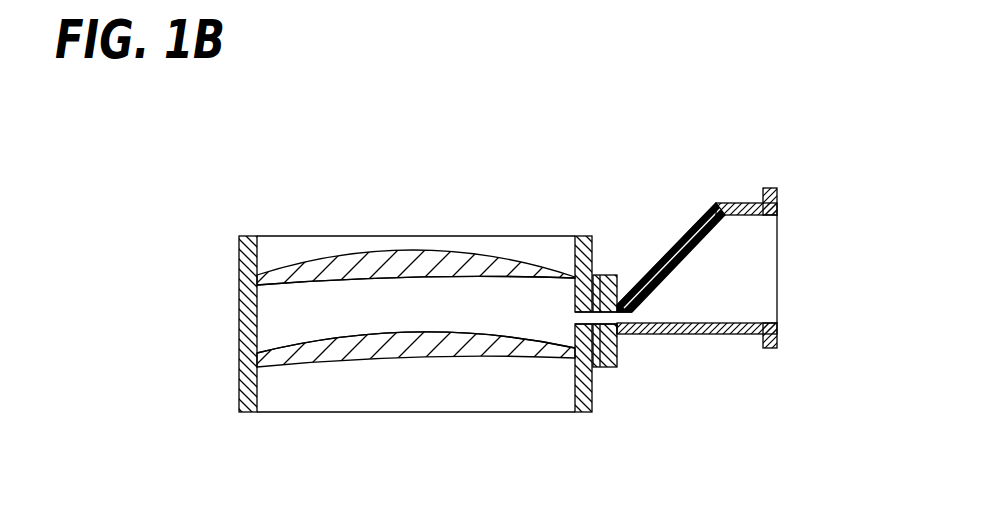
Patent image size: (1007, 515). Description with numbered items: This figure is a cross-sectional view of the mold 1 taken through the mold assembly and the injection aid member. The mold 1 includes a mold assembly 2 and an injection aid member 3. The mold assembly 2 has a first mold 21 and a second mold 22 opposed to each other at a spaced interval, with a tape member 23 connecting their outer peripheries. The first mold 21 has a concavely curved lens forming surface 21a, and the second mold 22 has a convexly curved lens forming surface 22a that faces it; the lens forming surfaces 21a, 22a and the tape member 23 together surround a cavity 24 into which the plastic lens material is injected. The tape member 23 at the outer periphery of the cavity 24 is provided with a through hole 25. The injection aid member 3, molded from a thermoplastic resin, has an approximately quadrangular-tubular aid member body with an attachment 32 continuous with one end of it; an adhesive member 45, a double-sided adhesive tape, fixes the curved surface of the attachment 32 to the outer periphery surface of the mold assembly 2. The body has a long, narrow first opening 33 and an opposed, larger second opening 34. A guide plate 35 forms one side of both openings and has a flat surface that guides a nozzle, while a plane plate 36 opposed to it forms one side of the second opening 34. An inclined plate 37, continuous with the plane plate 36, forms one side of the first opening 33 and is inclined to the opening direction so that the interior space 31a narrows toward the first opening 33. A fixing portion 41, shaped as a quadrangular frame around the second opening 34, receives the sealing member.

The mold 1 is at (630, 152).
The mold assembly 2 is at (529, 440).
The injection aid member 3 is at (727, 372).
The first mold 21 is at (430, 252).
The lens forming surface 21a is at (326, 284).
The second mold 22 is at (430, 352).
The lens forming surface 22a is at (334, 330).
The tape member 23 is at (240, 325).
The cavity 24 is at (478, 320).
The through hole 25 is at (575, 311).
The interior space 31a is at (742, 270).
The attachment 32 is at (623, 290).
The first opening 33 is at (627, 325).
The second opening 34 is at (778, 318).
The guide plate 35 is at (692, 334).
The plane plate 36 is at (740, 204).
The inclined plate 37 is at (697, 228).
The fixing portion 41 is at (778, 197).
The adhesive member 45 is at (597, 284).